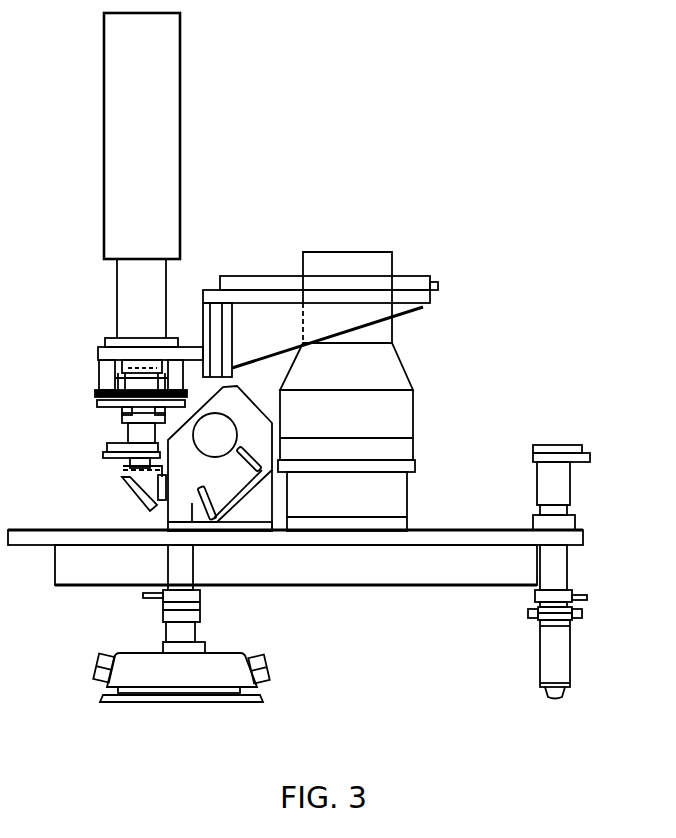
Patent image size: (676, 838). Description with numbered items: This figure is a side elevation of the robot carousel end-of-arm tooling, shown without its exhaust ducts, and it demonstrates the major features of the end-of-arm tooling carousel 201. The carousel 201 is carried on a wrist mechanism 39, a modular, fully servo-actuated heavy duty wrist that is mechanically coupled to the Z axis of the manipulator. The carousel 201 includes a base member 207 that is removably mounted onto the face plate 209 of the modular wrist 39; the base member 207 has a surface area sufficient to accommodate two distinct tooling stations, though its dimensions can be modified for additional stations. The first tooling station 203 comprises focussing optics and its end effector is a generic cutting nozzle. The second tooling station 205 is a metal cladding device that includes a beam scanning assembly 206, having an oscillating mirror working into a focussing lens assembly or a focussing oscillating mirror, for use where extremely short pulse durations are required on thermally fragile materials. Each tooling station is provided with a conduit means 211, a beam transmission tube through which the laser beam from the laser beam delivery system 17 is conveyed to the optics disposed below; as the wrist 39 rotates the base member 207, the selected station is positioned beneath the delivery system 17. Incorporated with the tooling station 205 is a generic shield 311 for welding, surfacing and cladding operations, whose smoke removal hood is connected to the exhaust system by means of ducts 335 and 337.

The laser beam delivery system 17 is at (178, 145).
The wrist mechanism 39 is at (390, 368).
The end-of-arm tooling carousel 201 is at (440, 657).
The first tooling station 203 is at (573, 512).
The second tooling station 205 is at (158, 518).
The beam scanning assembly 206 is at (232, 468).
The base member 207 is at (365, 575).
The face plate 209 is at (411, 529).
The conduit means 211 is at (125, 463).
The generic shield 311 is at (245, 705).
The duct 335 is at (265, 661).
The duct 337 is at (97, 660).